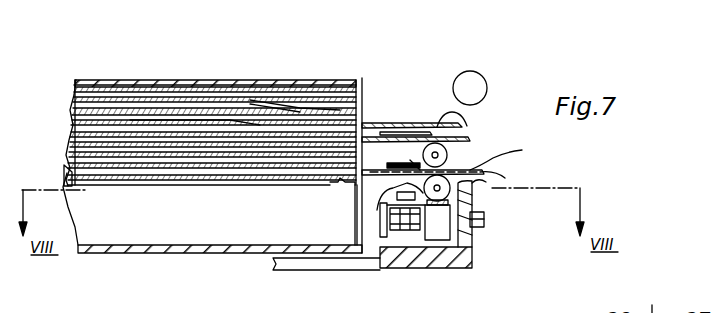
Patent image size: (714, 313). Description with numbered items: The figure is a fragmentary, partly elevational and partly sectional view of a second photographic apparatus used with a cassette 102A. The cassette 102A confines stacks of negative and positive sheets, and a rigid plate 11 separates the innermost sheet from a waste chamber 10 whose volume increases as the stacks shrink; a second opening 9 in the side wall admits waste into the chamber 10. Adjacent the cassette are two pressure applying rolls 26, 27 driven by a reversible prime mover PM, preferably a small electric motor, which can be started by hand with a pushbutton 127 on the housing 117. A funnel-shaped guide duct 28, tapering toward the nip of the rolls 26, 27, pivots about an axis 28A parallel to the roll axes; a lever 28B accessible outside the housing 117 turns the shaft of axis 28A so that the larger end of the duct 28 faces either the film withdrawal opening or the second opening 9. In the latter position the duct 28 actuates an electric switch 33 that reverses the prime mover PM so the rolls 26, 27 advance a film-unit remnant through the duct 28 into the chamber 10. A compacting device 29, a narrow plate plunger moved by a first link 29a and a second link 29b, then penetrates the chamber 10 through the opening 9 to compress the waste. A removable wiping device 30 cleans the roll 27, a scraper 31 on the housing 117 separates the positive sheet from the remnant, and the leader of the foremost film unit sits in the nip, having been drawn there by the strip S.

The cassette 102A is at (63, 62).
The waste chamber 10 is at (98, 243).
The rigid plate 11 is at (72, 182).
The second opening 9 is at (357, 228).
The lever 28B is at (404, 170).
The guide duct 28 is at (412, 160).
The pivot axis 28A is at (467, 120).
The prime mover PM is at (457, 112).
The pressure applying roll 26 is at (470, 152).
The strip S is at (502, 149).
The scraper 31 is at (514, 170).
The wiping device 30 is at (452, 226).
The housing 117 is at (465, 255).
The pressure applying roll 27 is at (483, 210).
The pushbutton 127 is at (484, 222).
The compacting device 29 is at (383, 240).
The first link 29a is at (395, 247).
The second link 29b is at (433, 250).
The electric switch 33 is at (398, 192).